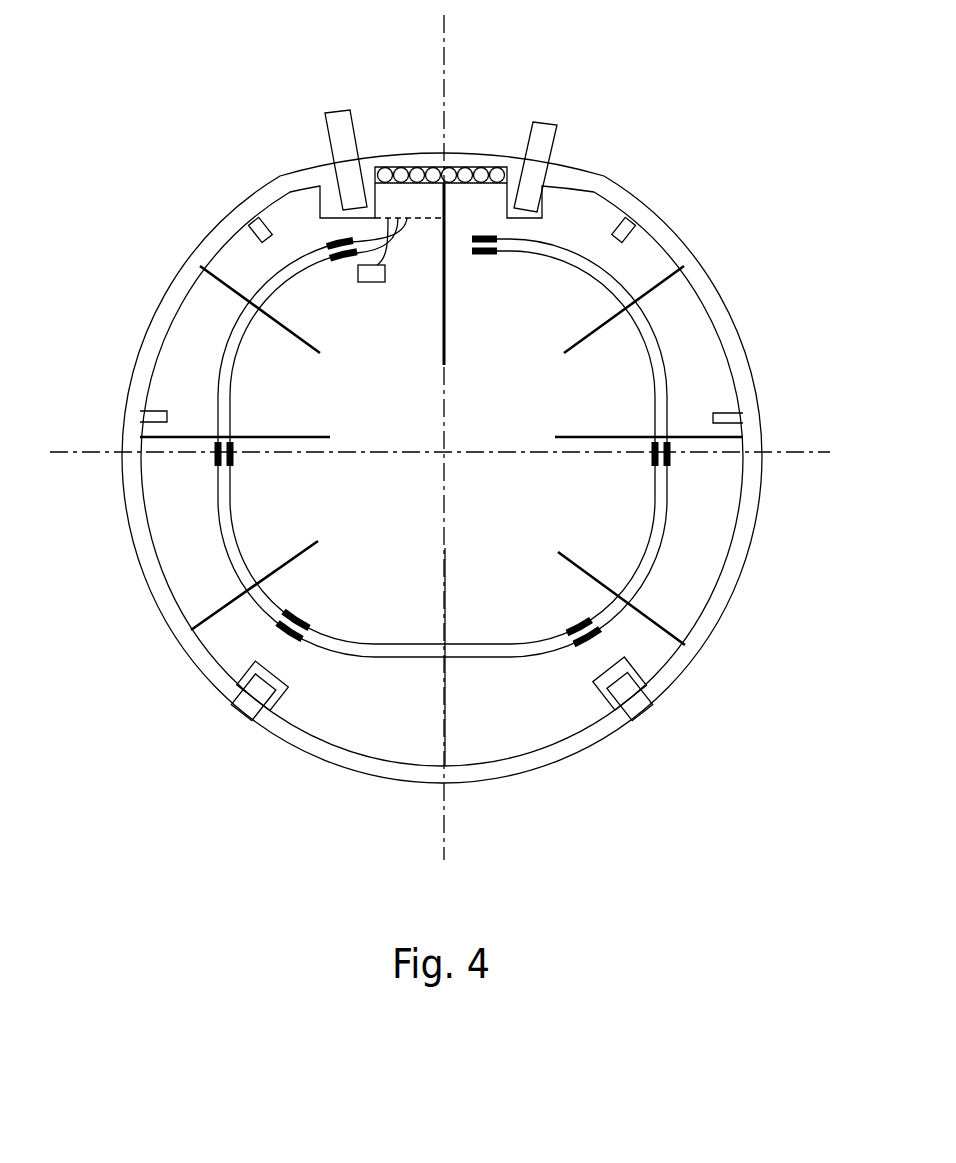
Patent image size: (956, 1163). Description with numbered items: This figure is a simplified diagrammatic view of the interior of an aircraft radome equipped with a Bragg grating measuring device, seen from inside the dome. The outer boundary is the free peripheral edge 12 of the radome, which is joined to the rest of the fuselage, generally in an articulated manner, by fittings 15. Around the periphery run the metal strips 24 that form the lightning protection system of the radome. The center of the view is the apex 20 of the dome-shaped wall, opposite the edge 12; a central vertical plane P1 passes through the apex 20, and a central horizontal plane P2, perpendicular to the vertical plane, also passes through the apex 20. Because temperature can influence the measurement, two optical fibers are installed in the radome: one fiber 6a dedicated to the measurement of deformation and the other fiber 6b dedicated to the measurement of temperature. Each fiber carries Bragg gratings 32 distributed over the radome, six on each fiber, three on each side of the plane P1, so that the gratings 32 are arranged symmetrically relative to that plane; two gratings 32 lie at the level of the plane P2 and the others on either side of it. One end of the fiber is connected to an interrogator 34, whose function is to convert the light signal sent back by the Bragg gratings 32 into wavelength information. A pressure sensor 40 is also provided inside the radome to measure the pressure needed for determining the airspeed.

The free peripheral edge 12 is at (218, 226).
The fittings 15 is at (337, 135).
The interrogator 34 is at (412, 207).
The pressure sensor 40 is at (373, 270).
The optical fiber 6a is at (233, 361).
The optical fiber 6b is at (268, 278).
The metal strips 24 is at (615, 437).
The Bragg gratings 32 is at (670, 452).
The apex 20 is at (450, 460).
The central vertical plane P1 is at (470, 435).
The central horizontal plane P2 is at (440, 434).